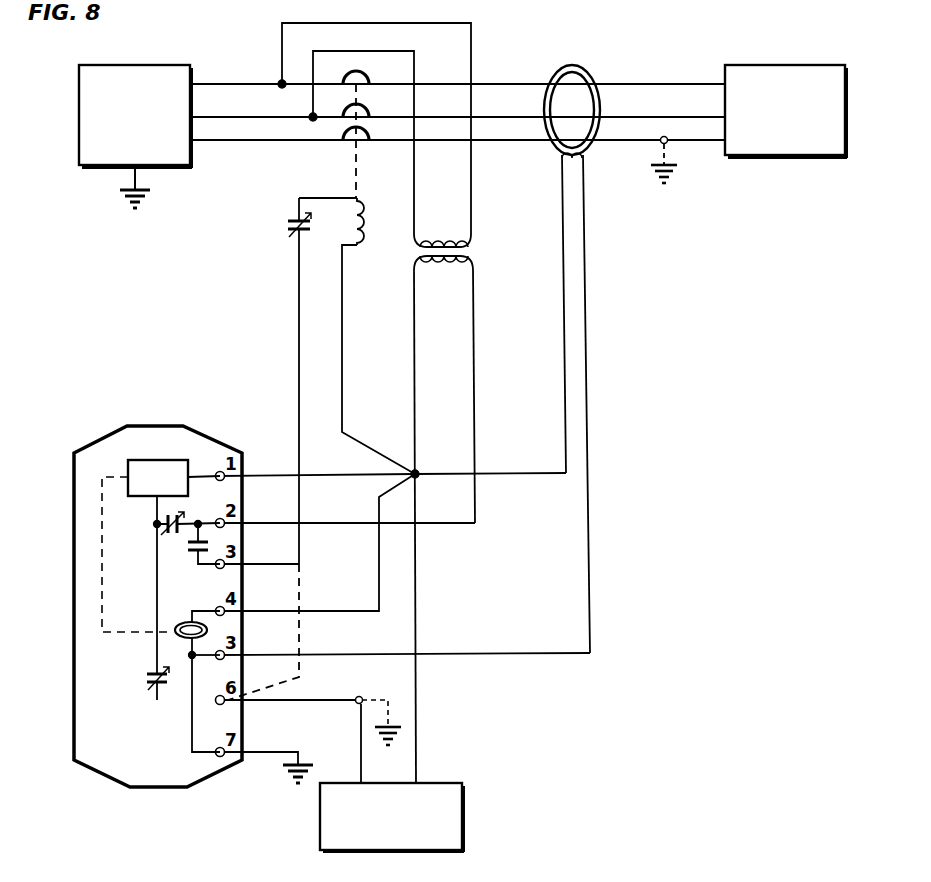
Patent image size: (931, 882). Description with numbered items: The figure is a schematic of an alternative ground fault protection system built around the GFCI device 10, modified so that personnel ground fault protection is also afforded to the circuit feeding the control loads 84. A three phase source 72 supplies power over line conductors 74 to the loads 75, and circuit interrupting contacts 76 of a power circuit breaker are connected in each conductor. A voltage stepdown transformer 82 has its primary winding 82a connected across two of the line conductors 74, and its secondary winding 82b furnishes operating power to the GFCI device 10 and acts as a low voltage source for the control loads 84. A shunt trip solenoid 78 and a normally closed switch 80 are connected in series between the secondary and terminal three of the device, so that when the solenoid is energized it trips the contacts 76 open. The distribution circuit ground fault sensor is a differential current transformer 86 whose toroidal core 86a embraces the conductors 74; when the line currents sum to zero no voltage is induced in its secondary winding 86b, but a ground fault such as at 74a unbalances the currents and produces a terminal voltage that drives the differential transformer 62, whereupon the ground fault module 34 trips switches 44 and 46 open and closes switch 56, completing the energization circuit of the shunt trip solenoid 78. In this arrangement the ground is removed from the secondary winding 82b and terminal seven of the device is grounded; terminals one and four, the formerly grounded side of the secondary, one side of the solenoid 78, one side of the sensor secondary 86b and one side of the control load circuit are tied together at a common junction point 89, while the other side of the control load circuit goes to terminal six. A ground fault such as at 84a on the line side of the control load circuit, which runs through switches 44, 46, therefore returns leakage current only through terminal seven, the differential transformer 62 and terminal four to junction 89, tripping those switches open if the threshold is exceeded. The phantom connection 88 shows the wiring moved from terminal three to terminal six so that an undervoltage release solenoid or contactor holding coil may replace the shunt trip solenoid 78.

The GFCI device 10 is at (138, 797).
The ground fault module 34 is at (140, 460).
The switch 44 is at (178, 515).
The switch 46 is at (146, 680).
The switch 56 is at (192, 551).
The differential transformer 62 is at (182, 622).
The three phase source 72 is at (117, 66).
The line conductors 74 is at (246, 86).
The ground fault 74a is at (678, 176).
The loads 75 is at (782, 66).
The circuit interrupting contacts 76 is at (369, 80).
The shunt trip solenoid 78 is at (364, 220).
The normally closed switch 80 is at (288, 226).
The voltage stepdown transformer 82 is at (463, 495).
The primary winding 82a is at (445, 243).
The secondary winding 82b is at (448, 268).
The control loads 84 is at (453, 784).
The ground fault 84a is at (380, 748).
The differential current transformer 86 is at (598, 340).
The toroidal core 86a is at (600, 105).
The secondary winding 86b is at (580, 166).
The phantom wiring connection 88 is at (304, 680).
The common junction point 89 is at (418, 472).